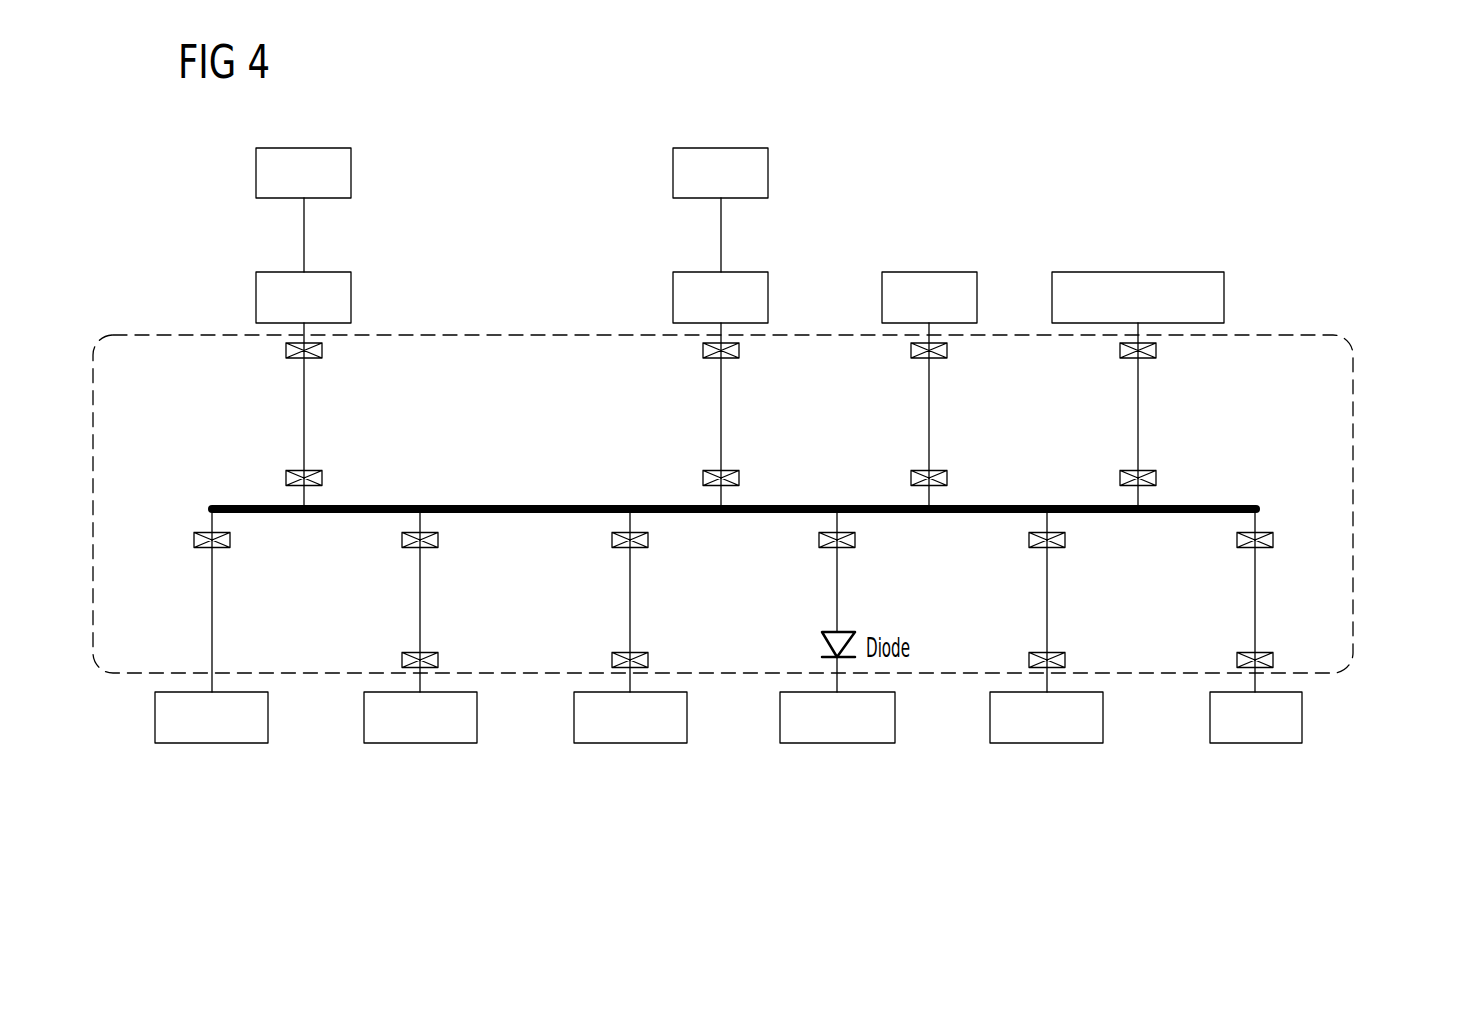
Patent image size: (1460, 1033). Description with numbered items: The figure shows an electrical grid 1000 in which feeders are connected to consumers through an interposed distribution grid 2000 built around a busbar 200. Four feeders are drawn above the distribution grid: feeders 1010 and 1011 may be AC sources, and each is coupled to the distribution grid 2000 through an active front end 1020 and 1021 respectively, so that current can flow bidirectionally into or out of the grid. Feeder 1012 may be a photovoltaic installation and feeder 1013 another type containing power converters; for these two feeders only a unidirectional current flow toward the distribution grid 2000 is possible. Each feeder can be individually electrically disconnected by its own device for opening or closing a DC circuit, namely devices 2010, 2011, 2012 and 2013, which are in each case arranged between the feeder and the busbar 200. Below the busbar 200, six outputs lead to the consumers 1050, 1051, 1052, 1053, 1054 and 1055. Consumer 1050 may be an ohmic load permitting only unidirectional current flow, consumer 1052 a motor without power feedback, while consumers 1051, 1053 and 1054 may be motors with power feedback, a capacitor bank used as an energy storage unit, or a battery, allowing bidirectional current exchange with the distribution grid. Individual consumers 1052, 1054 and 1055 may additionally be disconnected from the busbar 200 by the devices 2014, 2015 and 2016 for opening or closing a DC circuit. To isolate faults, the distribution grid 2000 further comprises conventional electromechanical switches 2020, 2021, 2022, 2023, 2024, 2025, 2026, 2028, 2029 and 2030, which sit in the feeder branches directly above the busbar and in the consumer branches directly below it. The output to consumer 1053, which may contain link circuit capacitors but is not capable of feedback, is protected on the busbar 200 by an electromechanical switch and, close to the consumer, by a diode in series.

The electrical grid 1000 is at (1143, 100).
The distribution grid 2000 is at (1353, 410).
The busbar 200 is at (1236, 505).
The feeder 1010 is at (334, 146).
The feeder 1011 is at (749, 146).
The feeder 1012 is at (958, 271).
The feeder 1013 is at (1188, 271).
The active front end 1020 is at (334, 271).
The active front end 1021 is at (749, 271).
The consumer 1050 is at (212, 745).
The consumer 1051 is at (420, 745).
The consumer 1052 is at (630, 745).
The consumer 1053 is at (837, 745).
The consumer 1054 is at (1047, 745).
The consumer 1055 is at (1255, 745).
The device for opening or closing a DC circuit 2010 is at (285, 350).
The device for opening or closing a DC circuit 2011 is at (703, 350).
The device for opening or closing a DC circuit 2012 is at (912, 350).
The device for opening or closing a DC circuit 2013 is at (1120, 350).
The device for opening or closing a DC circuit 2014 is at (612, 660).
The device for opening or closing a DC circuit 2015 is at (1029, 660).
The device for opening or closing a DC circuit 2016 is at (1237, 660).
The electromechanical switch 2020 is at (285, 478).
The electromechanical switch 2021 is at (703, 478).
The electromechanical switch 2022 is at (912, 475).
The electromechanical switch 2023 is at (1120, 475).
The electromechanical switch 2024 is at (194, 537).
The electromechanical switch 2025 is at (403, 537).
The electromechanical switch 2026 is at (612, 537).
The electromechanical switch 2028 is at (1030, 537).
The electromechanical switch 2029 is at (1238, 537).
The electromechanical switch 2030 is at (402, 660).